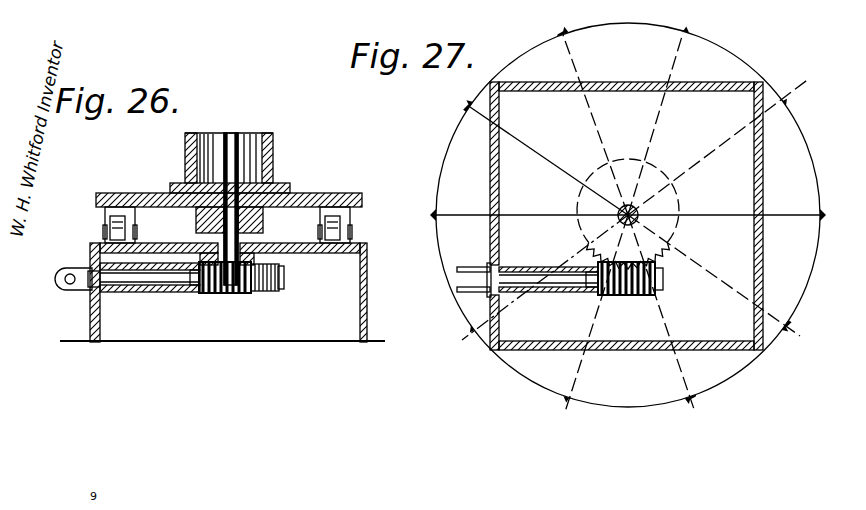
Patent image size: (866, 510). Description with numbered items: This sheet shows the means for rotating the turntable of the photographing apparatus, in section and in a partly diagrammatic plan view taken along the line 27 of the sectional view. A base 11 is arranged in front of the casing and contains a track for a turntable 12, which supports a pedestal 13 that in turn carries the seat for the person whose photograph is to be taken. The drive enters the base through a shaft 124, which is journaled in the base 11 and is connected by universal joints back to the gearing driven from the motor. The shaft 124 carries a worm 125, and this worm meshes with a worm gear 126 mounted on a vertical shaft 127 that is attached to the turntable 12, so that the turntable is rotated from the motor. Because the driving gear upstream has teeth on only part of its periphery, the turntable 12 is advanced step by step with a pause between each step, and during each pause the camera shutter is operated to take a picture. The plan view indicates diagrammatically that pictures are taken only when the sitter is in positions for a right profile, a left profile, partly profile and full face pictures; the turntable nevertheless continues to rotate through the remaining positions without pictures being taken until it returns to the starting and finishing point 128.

In FIG. 26, the base 11 is at (90, 318).
In FIG. 27, the base 11 is at (766, 172).
In FIG. 26, the turntable 12 is at (136, 193).
In FIG. 26, the pedestal 13 is at (275, 150).
In FIG. 26, the section line 27- 27 is at (100, 257).
In FIG. 26, the shaft 124 is at (140, 290).
In FIG. 27, the shaft 124 is at (536, 258).
In FIG. 26, the worm 125 is at (236, 293).
In FIG. 27, the worm 125 is at (617, 296).
In FIG. 26, the worm gear 126 is at (279, 293).
In FIG. 27, the worm gear 126 is at (682, 200).
In FIG. 26, the vertical shaft 127 is at (236, 152).
In FIG. 27, the vertical shaft 127 is at (648, 172).
In FIG. 27, the starting and finishing point 128 is at (692, 38).